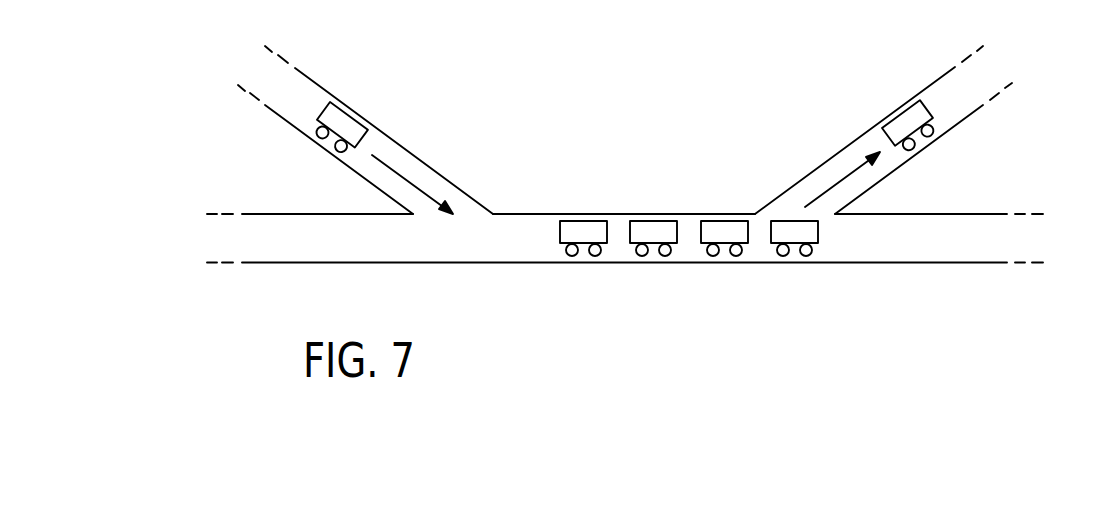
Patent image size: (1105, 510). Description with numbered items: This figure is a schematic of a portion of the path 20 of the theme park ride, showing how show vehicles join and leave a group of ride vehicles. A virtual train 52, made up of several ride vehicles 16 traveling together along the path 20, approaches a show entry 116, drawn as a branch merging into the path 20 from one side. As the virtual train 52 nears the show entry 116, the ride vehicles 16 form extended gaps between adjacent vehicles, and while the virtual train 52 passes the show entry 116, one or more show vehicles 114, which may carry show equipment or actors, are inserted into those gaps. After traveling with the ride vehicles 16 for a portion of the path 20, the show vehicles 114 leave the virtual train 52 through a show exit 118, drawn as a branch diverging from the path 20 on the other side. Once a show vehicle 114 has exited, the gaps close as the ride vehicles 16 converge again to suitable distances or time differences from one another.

The ride vehicle 16 is at (660, 221).
The path 20 is at (912, 264).
The virtual train 52 is at (842, 273).
The show vehicle 114 is at (347, 110).
The show entry 116 is at (480, 193).
The show exit 118 is at (787, 182).